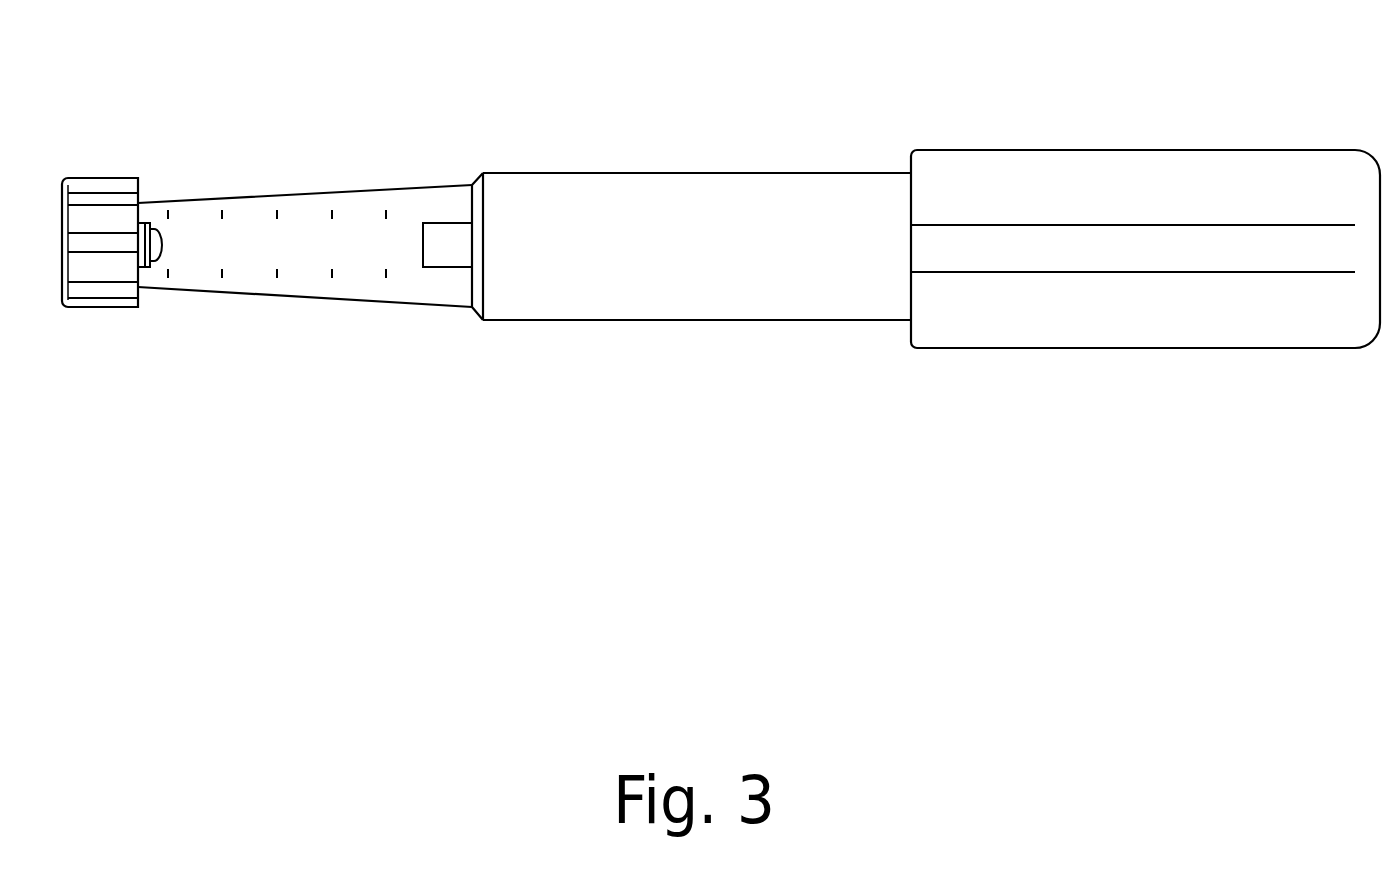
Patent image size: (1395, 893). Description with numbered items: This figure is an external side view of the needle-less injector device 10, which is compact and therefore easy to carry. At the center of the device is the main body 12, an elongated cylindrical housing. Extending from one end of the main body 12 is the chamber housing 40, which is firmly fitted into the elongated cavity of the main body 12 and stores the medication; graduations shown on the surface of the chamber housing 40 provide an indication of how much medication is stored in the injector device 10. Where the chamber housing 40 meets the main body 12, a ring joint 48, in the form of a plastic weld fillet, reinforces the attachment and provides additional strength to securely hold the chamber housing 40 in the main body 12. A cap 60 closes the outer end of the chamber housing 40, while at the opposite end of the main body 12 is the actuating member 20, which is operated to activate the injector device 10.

The needle-less injector device 10 is at (719, 248).
The main body 12 is at (718, 303).
The actuating member 20 is at (1043, 155).
The chamber housing 40 is at (253, 290).
The ring joint 48 is at (468, 321).
The cap 60 is at (104, 320).